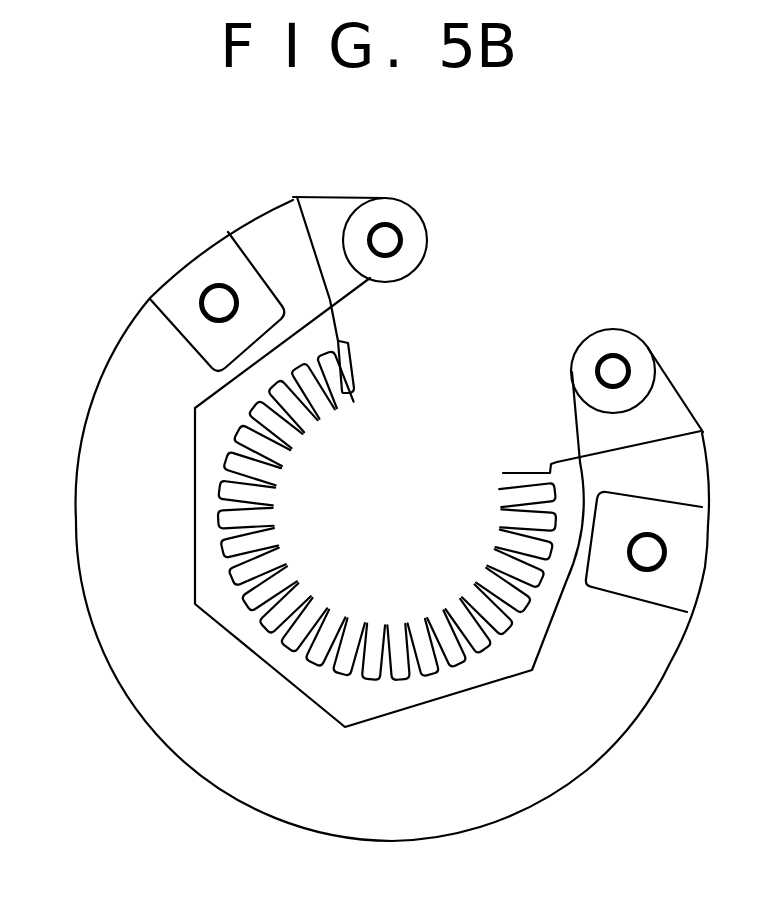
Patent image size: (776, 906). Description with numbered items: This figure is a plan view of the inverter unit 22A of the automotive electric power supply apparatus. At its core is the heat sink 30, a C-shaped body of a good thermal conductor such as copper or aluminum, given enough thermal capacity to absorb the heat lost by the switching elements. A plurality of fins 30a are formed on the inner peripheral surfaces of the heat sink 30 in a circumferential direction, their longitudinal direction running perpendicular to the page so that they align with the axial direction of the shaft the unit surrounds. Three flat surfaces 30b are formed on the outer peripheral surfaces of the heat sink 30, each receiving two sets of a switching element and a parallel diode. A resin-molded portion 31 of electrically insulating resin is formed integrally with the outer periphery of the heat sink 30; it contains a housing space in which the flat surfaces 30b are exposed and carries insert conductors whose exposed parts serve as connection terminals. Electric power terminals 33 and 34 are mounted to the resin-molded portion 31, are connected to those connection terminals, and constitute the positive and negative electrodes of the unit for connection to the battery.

The inverter unit 22A is at (630, 246).
The heat sink 30 is at (345, 335).
The fins 30a is at (351, 380).
The flat surfaces 30b is at (190, 498).
The resin-molded portion 31 is at (277, 197).
The electric power terminal 33 is at (218, 296).
The electric power terminal 34 is at (655, 552).